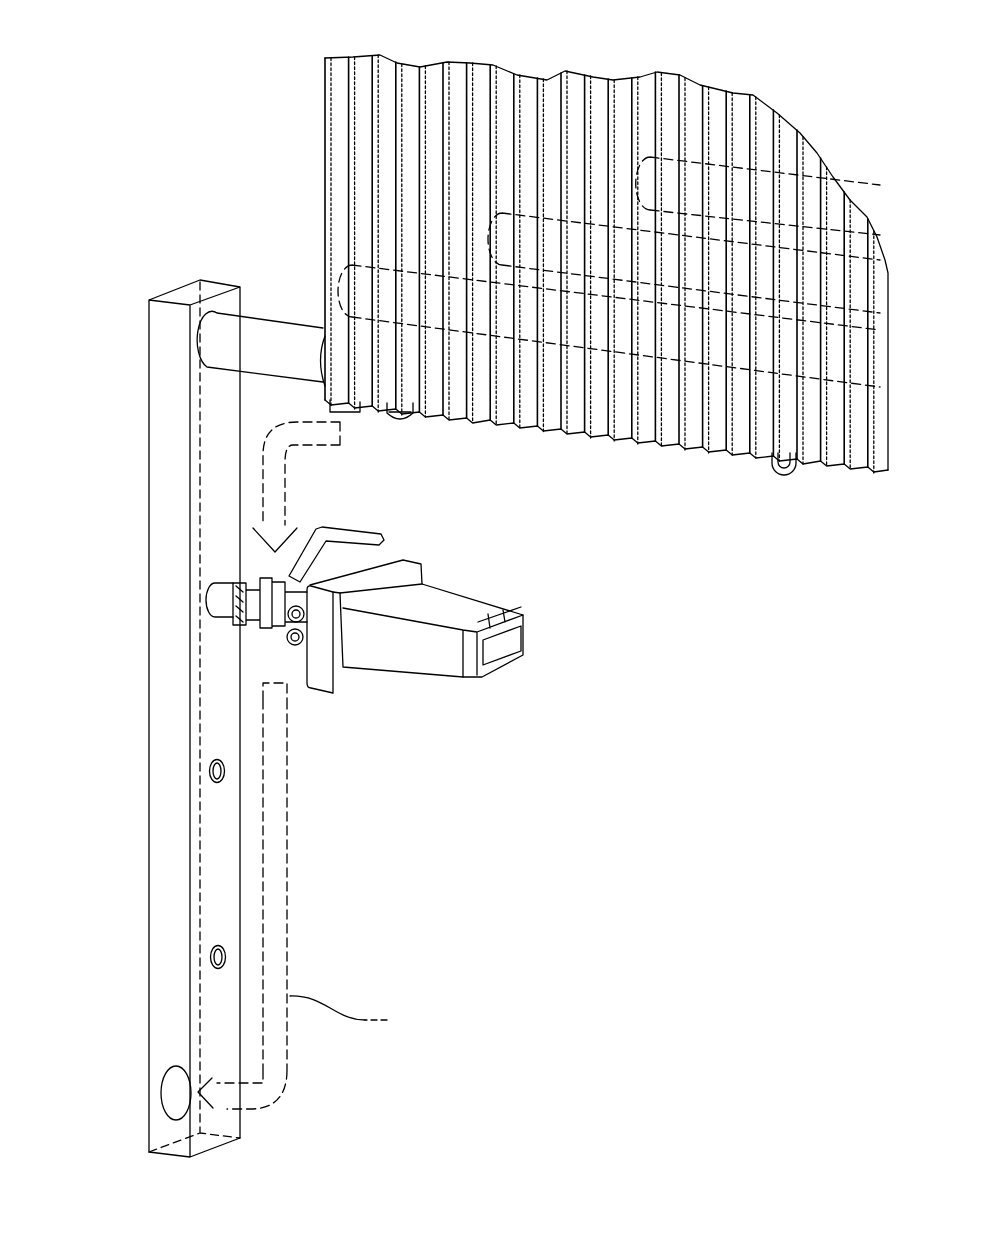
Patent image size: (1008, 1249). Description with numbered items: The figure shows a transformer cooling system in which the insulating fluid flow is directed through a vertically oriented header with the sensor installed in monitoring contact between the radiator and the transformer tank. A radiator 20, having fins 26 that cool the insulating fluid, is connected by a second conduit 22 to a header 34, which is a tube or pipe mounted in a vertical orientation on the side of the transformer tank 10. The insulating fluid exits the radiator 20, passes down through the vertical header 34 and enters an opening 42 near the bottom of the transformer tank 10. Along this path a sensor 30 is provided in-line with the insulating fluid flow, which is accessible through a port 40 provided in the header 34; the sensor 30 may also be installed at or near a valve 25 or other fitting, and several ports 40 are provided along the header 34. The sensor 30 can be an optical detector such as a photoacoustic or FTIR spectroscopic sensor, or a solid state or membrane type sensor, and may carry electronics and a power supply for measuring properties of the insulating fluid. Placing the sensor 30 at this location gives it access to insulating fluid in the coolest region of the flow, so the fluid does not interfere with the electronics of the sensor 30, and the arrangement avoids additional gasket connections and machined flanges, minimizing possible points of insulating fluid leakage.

The transformer tank 10 is at (93, 843).
The radiator 20 is at (788, 270).
The second conduit 22 is at (258, 335).
The valve 25 is at (237, 626).
The fins 26 is at (581, 131).
The sensor 30 is at (417, 667).
The header 34 is at (182, 533).
The port 40 is at (217, 598).
The opening 42 is at (173, 1097).